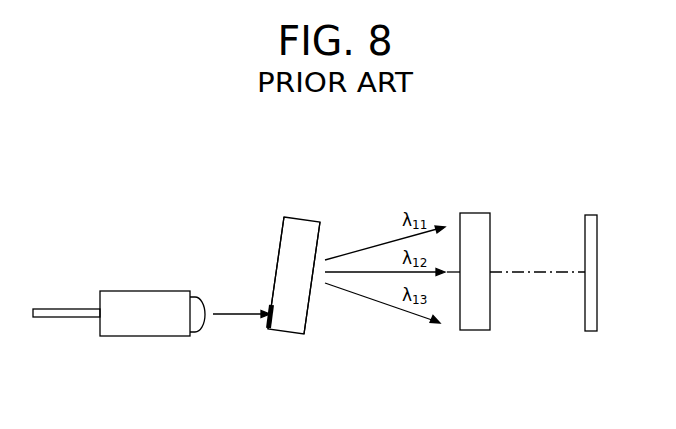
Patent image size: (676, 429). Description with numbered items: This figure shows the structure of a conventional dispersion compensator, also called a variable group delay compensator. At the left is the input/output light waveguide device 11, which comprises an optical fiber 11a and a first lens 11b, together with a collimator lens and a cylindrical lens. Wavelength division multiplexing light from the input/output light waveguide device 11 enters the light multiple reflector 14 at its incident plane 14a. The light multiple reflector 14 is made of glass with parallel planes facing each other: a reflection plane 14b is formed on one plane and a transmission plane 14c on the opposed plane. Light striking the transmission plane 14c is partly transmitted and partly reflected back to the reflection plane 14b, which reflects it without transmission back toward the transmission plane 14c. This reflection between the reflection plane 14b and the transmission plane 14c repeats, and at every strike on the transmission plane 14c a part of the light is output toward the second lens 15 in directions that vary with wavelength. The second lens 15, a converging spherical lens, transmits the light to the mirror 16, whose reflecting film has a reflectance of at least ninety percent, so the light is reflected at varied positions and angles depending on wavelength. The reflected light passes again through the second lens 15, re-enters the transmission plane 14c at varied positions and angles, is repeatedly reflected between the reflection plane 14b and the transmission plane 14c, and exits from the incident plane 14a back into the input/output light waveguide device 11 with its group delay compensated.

The input/output light waveguide device 11 is at (119, 258).
The optical fiber 11a is at (87, 305).
The first lens 11b is at (152, 277).
The light multiple reflector 14 is at (297, 278).
The incident plane 14a is at (270, 332).
The reflection plane 14b is at (282, 250).
The transmission plane 14c is at (310, 313).
The second lens 15 is at (477, 213).
The mirror 16 is at (588, 215).